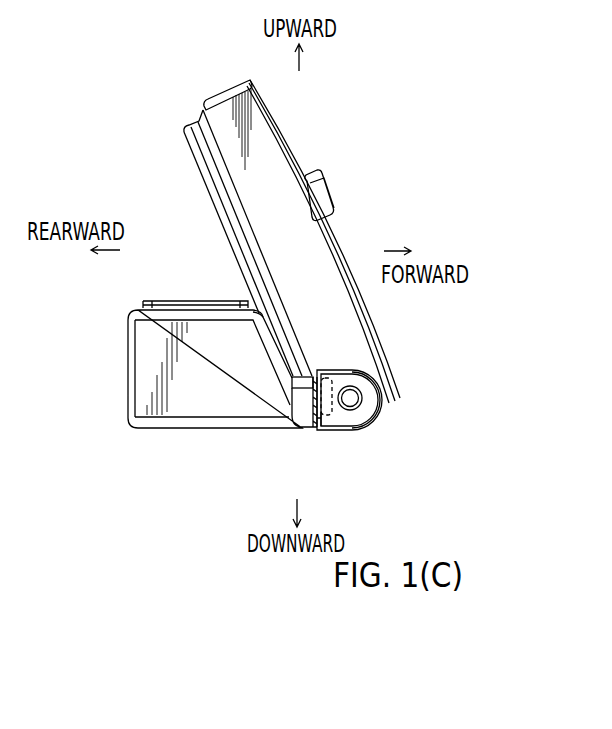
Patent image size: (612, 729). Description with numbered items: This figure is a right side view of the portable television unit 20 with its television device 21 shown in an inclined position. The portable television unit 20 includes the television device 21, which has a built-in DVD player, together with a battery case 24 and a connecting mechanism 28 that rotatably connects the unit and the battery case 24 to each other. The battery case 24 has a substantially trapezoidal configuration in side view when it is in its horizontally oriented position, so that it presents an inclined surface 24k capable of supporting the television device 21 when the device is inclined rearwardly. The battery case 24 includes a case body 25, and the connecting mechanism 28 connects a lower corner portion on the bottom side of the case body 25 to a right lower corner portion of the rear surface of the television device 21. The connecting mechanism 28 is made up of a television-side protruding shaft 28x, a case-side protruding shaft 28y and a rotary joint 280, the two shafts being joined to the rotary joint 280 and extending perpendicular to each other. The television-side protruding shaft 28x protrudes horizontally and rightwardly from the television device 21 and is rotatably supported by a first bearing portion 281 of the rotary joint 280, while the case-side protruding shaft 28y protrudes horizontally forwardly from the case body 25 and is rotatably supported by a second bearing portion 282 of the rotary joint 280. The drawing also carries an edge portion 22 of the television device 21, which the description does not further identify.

The portable television unit 20 is at (162, 168).
The television device 21 is at (284, 125).
The lid front edge portion 22 is at (317, 265).
The battery case 24 is at (123, 417).
The inclined surface 24k is at (283, 300).
The case body 25 is at (200, 402).
The connecting mechanism 28 is at (355, 437).
The television-side protruding shaft 28x is at (370, 415).
The case-side protruding shaft 28y is at (331, 378).
The rotary joint 280 is at (328, 421).
The first bearing portion 281 is at (361, 396).
The second bearing portion 282 is at (290, 411).